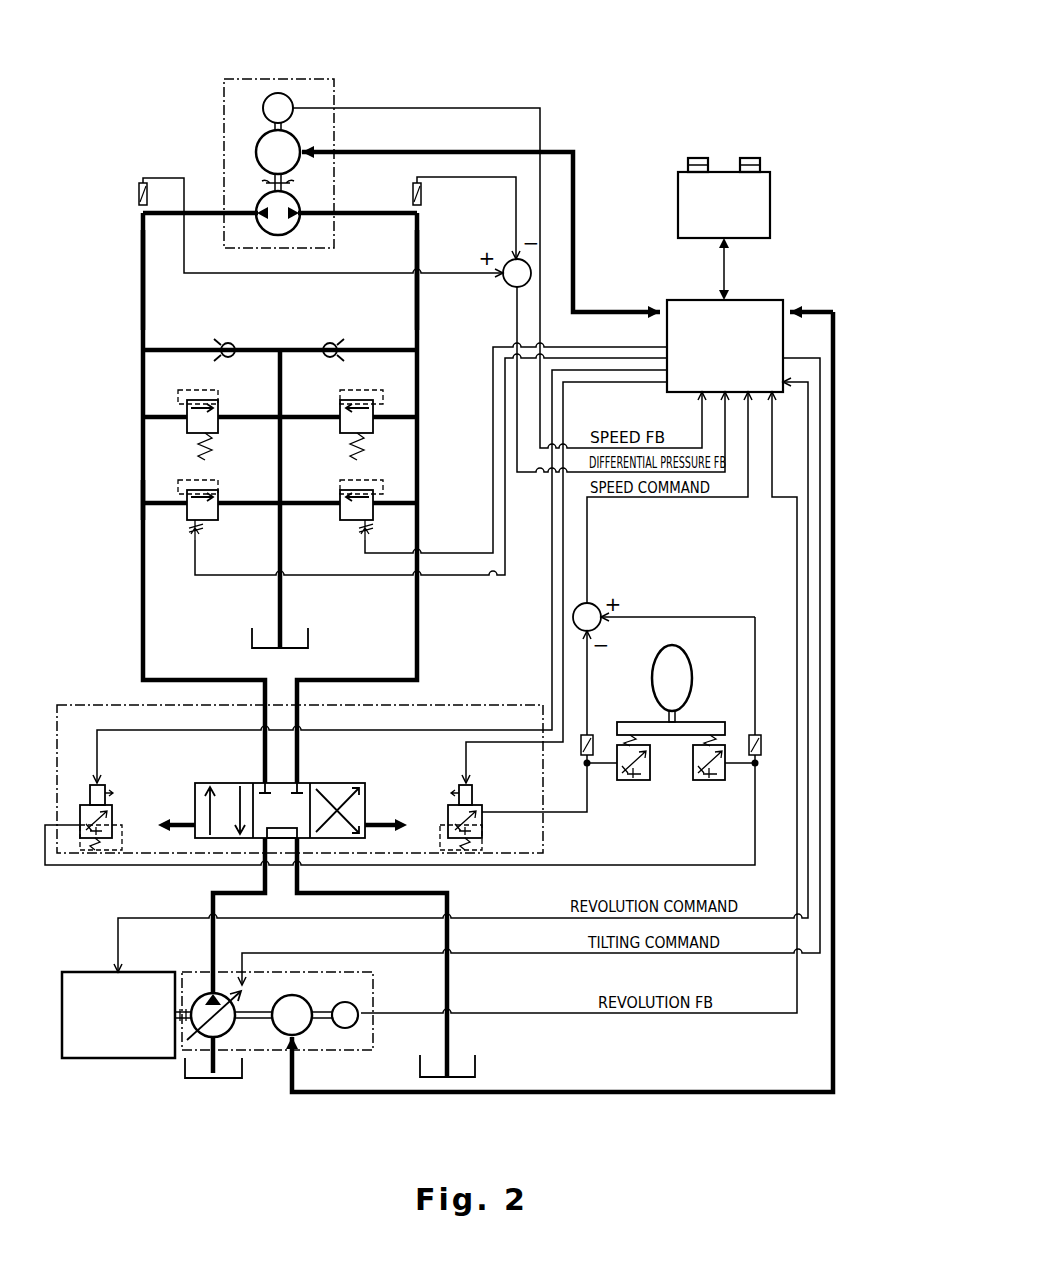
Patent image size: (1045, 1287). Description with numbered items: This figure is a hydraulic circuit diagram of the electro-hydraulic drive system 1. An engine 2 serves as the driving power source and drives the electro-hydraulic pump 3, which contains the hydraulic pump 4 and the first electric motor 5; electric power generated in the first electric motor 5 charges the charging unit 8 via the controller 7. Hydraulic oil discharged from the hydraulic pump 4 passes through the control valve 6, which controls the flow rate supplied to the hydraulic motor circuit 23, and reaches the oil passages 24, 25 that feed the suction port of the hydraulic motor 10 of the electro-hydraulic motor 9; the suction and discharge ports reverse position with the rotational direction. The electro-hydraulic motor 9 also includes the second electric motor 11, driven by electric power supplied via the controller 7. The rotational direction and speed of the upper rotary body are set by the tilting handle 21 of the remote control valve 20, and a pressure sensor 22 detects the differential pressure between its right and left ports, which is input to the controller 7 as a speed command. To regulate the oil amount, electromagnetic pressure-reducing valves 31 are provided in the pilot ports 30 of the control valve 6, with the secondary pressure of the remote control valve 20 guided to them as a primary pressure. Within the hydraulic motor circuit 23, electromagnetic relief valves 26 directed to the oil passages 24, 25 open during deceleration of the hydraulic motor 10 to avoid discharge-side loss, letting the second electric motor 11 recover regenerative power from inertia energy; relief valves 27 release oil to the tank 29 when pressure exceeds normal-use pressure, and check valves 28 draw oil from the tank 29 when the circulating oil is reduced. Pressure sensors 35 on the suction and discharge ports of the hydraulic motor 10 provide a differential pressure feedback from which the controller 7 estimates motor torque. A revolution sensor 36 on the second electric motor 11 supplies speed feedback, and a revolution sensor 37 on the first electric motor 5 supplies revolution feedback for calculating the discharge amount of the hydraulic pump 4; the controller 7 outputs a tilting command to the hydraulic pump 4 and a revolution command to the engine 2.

The electro-hydraulic drive system 1 is at (622, 70).
The engine 2 is at (115, 1061).
The electro-hydraulic pump 3 is at (271, 1052).
The hydraulic pump 4 is at (236, 1026).
The first electric motor 5 is at (308, 1030).
The control valve 6 is at (120, 703).
The controller 7 is at (680, 300).
The charging unit 8 is at (680, 172).
The electro-hydraulic motor 9 is at (232, 78).
The hydraulic motor 10 is at (258, 204).
The second electric motor 11 is at (258, 144).
The remote control valve 20 is at (694, 656).
The tilting handle 21 is at (686, 689).
The pressure sensor 22 is at (591, 733).
The hydraulic motor circuit 23 is at (140, 480).
The oil passage 24 is at (142, 322).
The oil passage 25 is at (418, 322).
The electromagnetic relief valve 26 is at (212, 492).
The relief valve 27 is at (216, 403).
The check valve 28 is at (230, 342).
The tank 29 is at (308, 641).
The pilot port 30 is at (194, 800).
The electromagnetic pressure-reducing valve 31 is at (84, 808).
The pressure sensor 35 is at (139, 196).
The revolution sensor 36 is at (281, 93).
The revolution sensor 37 is at (352, 1028).